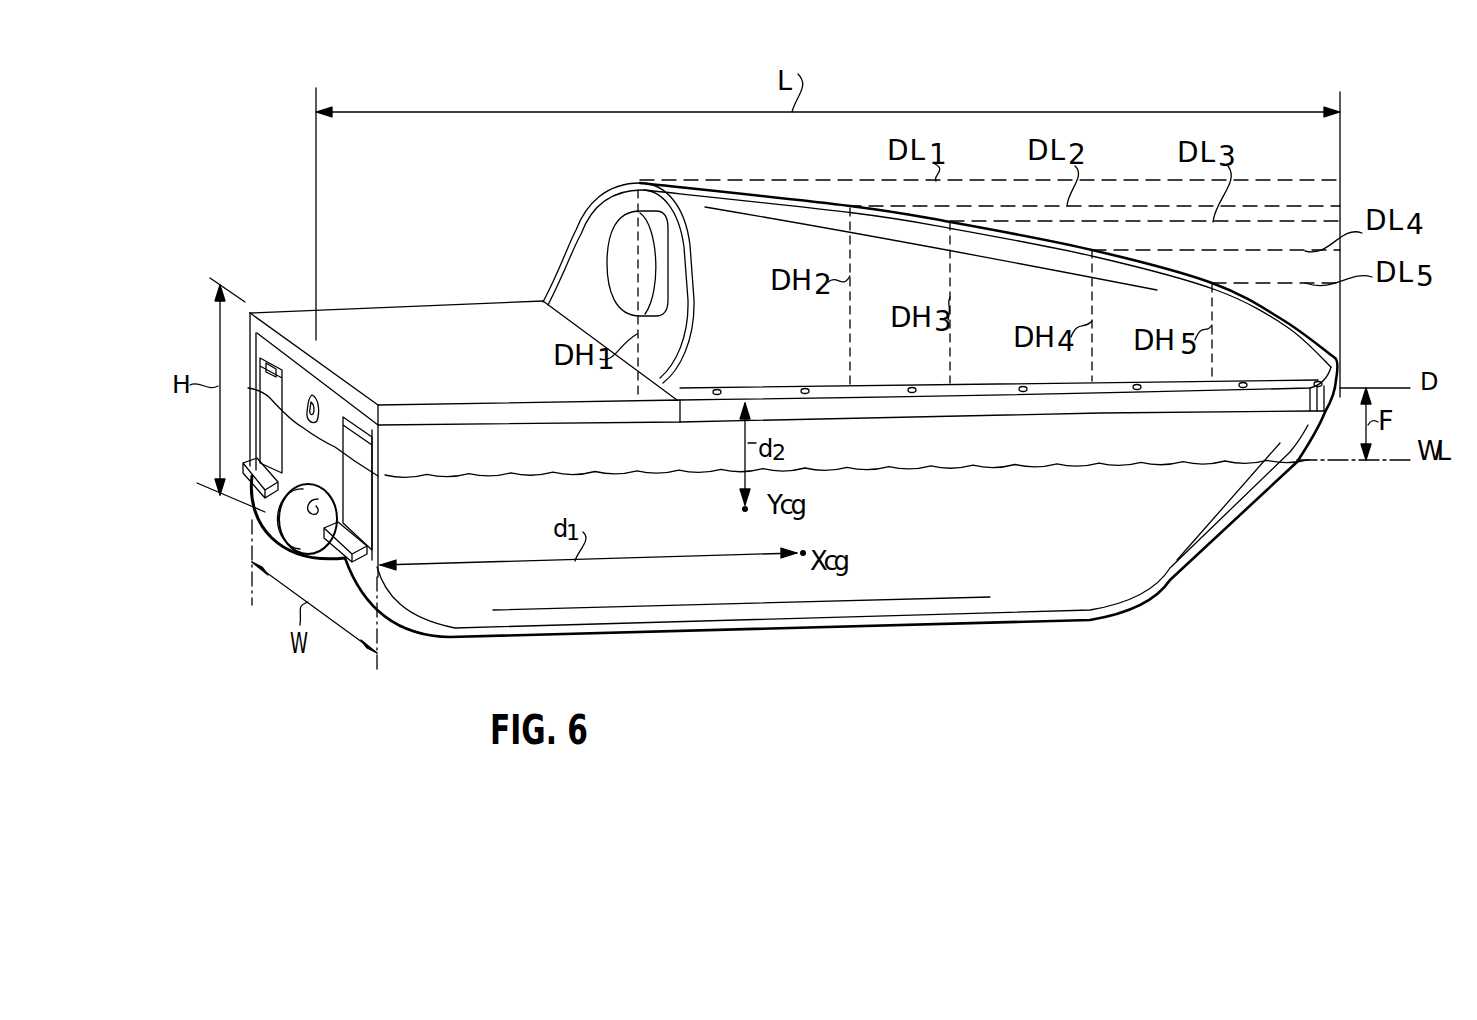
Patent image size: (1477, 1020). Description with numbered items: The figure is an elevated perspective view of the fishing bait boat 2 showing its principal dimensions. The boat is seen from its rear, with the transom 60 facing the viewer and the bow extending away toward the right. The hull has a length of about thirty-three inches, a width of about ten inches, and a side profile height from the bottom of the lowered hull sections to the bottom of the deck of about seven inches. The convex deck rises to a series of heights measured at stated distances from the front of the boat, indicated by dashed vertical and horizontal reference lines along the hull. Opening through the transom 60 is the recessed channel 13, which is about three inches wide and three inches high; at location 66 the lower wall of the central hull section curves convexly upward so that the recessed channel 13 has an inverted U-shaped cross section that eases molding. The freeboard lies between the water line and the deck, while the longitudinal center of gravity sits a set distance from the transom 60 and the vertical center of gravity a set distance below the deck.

The cabin / hood 2 is at (718, 210).
The recessed channel 13 is at (283, 507).
The transom 60 is at (263, 508).
The location of convexly upwardly curved lower wall 66 is at (312, 503).